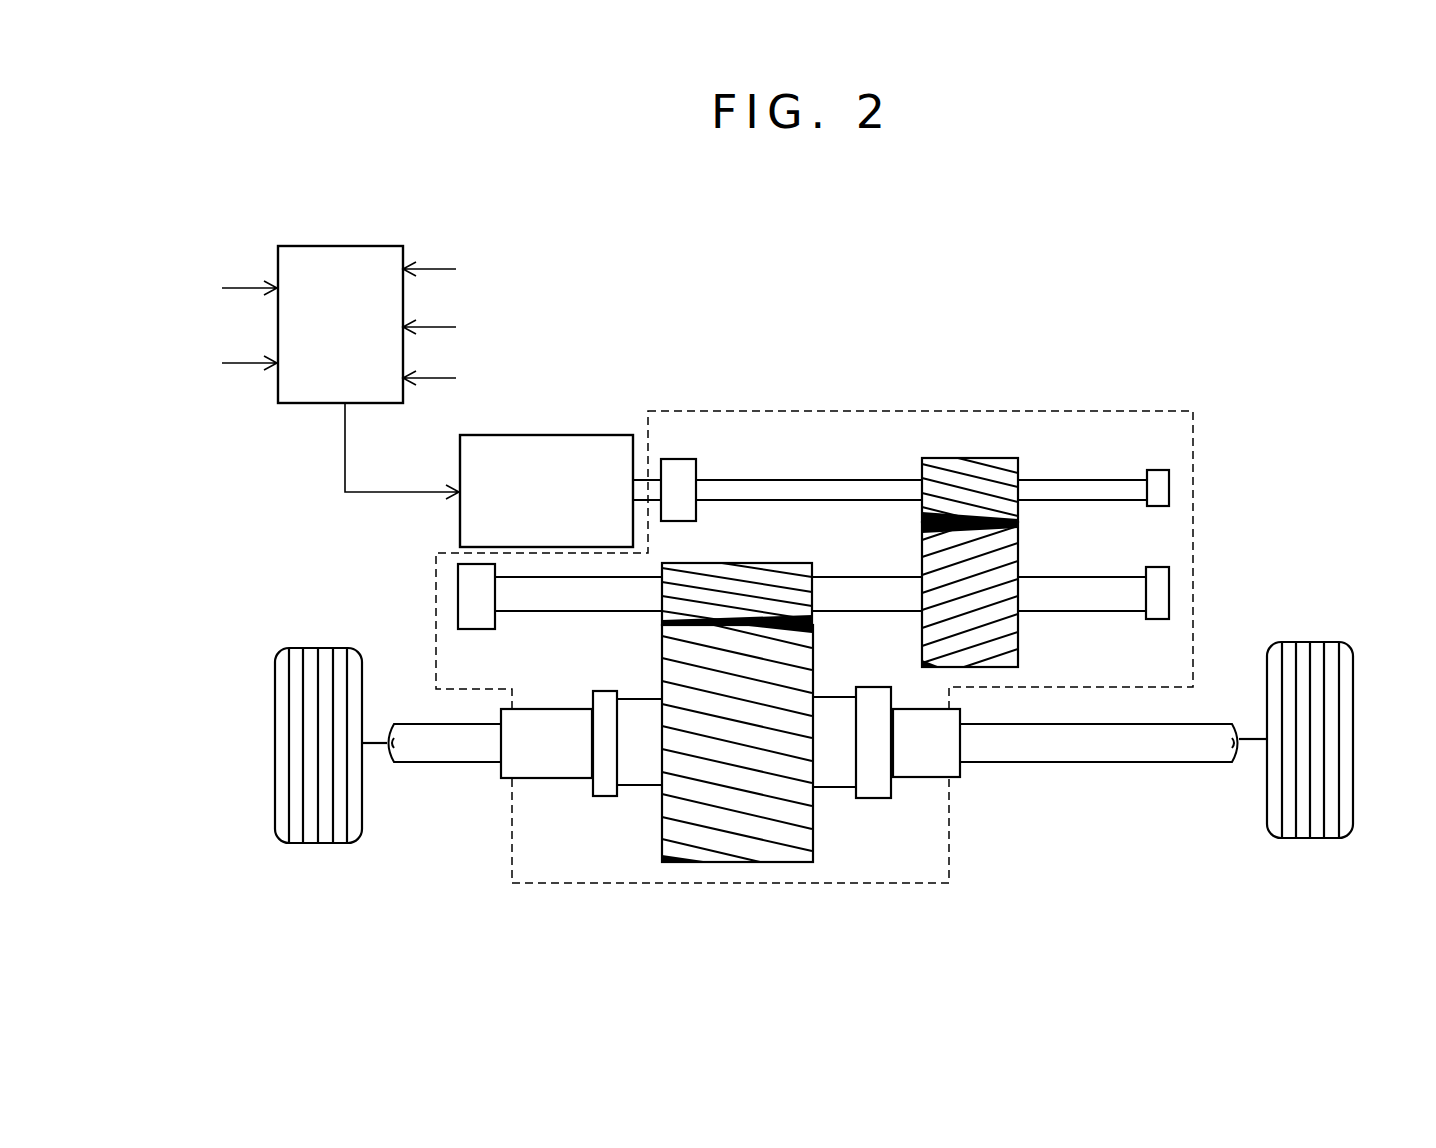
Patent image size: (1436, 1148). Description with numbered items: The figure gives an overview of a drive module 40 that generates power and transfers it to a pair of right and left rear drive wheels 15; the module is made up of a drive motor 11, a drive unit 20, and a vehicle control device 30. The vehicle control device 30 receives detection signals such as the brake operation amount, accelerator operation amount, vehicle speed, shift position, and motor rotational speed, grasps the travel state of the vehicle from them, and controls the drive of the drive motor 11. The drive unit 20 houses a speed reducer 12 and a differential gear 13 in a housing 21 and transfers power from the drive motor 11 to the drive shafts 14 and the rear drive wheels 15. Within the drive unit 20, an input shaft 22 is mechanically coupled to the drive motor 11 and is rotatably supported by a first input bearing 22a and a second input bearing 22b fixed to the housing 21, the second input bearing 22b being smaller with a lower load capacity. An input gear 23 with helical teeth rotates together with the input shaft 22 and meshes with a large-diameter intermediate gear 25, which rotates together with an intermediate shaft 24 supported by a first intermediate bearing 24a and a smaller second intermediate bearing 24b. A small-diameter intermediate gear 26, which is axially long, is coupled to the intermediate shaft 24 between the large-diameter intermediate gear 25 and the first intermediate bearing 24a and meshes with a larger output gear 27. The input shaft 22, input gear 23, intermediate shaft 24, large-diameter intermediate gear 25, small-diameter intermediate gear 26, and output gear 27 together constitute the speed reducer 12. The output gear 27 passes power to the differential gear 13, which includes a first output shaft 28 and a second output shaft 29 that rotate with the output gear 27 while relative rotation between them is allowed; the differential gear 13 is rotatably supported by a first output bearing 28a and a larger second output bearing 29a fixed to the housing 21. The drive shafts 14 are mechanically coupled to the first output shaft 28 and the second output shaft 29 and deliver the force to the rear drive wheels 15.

The drive module 40 is at (287, 200).
The vehicle control device 30 is at (370, 246).
The drive motor 11 is at (555, 435).
The drive unit 20 is at (752, 381).
The housing 21 is at (857, 411).
The speed reducer 12 is at (1088, 451).
The input shaft 22 is at (791, 479).
The first input bearing 22a is at (678, 459).
The second input bearing 22b is at (1169, 486).
The input gear 23 is at (965, 458).
The intermediate shaft 24 is at (1113, 575).
The first intermediate bearing 24a is at (458, 582).
The second intermediate bearing 24b is at (1169, 591).
The large-diameter intermediate gear 25 is at (1018, 522).
The small-diameter intermediate gear 26 is at (734, 563).
The output gear 27 is at (662, 640).
The differential gear 13 is at (833, 780).
The drive shafts 14 is at (420, 764).
The rear drive wheels 15 is at (275, 738).
The first output shaft 28 is at (546, 766).
The first output bearing 28a is at (606, 786).
The second output shaft 29 is at (916, 766).
The second output bearing 29a is at (876, 690).